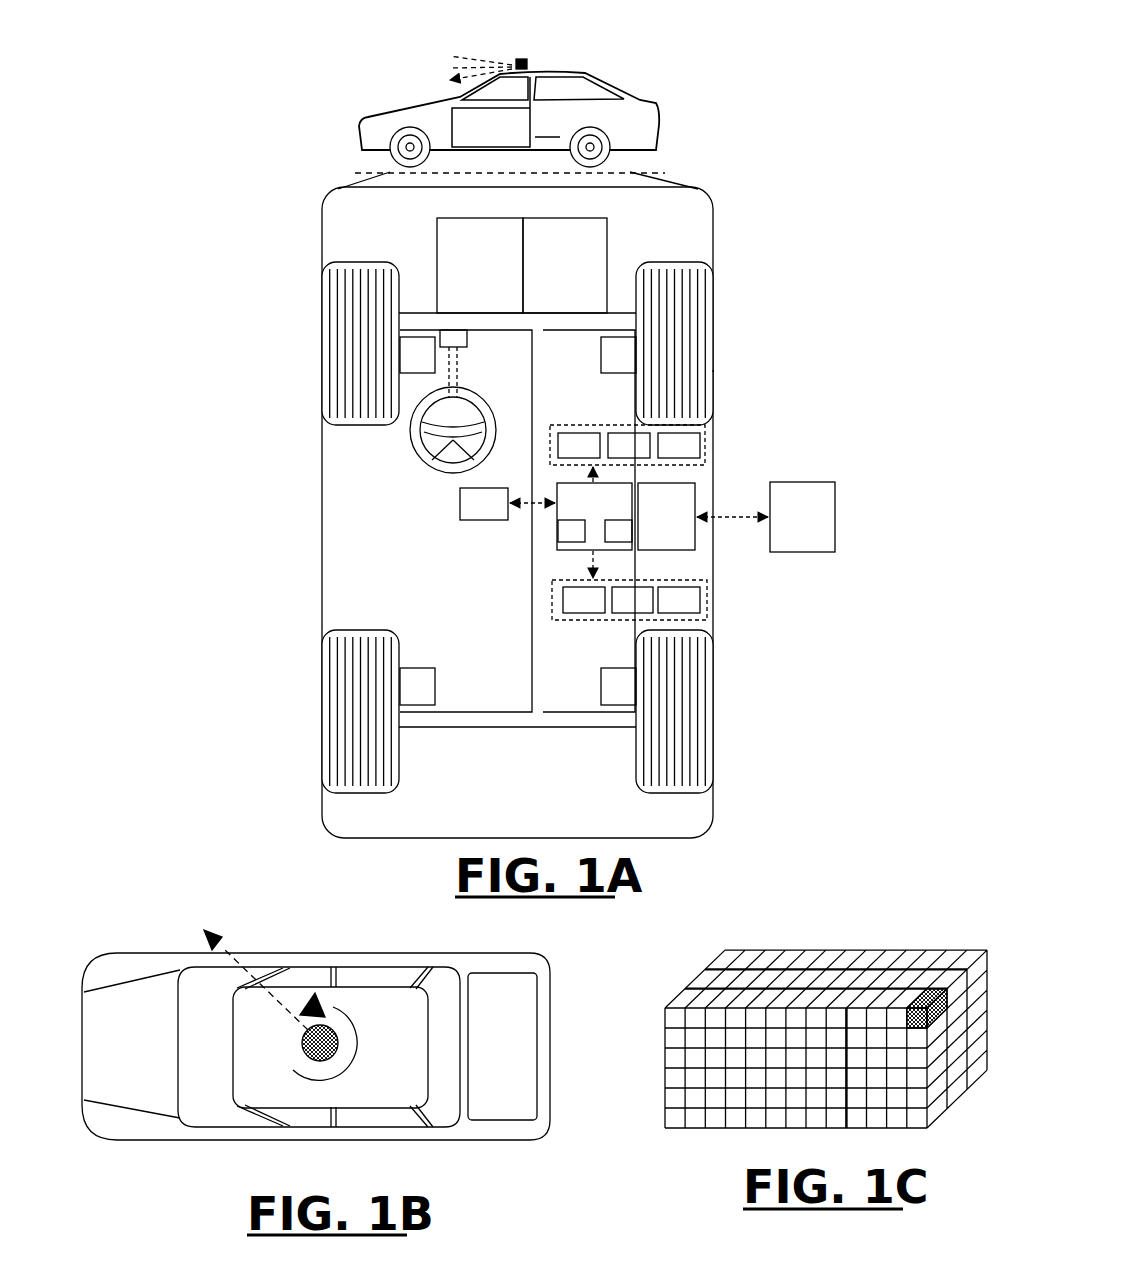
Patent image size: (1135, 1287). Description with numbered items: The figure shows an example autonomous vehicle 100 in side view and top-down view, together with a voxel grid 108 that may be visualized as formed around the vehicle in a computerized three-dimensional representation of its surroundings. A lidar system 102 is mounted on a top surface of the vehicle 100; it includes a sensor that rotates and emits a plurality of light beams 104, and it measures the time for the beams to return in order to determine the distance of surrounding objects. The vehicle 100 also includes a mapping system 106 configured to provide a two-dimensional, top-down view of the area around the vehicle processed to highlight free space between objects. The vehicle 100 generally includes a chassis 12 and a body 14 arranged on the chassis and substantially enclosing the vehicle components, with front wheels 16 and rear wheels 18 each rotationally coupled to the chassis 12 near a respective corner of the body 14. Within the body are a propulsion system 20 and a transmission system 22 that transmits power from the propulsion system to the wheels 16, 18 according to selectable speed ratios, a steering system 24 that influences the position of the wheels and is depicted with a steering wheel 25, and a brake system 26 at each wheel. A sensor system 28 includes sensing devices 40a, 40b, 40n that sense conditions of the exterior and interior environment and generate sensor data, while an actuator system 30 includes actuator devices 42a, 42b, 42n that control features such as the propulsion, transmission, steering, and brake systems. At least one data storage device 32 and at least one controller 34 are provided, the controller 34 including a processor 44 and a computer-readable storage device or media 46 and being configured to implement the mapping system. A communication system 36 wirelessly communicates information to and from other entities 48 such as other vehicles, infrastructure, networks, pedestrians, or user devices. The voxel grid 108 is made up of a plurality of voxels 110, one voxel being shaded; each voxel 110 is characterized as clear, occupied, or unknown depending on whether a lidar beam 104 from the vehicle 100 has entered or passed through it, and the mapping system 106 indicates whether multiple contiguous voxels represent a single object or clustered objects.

In FIG. 1A, the chassis 12 is at (541, 728).
In FIG. 1A, the body 14 is at (322, 486).
In FIG. 1A, the front wheels 16 is at (517, 343).
In FIG. 1A, the rear wheels 18 is at (517, 711).
In FIG. 1A, the propulsion system 20 is at (480, 265).
In FIG. 1A, the transmission system 22 is at (565, 265).
In FIG. 1A, the steering system 24 is at (432, 484).
In FIG. 1A, the steering wheel 25 is at (484, 392).
In FIG. 1A, the brake system 26 is at (518, 521).
In FIG. 1A, the sensor system 28 is at (588, 424).
In FIG. 1A, the actuator system 30 is at (575, 622).
In FIG. 1A, the data storage device 32 is at (507, 504).
In FIG. 1A, the controller 34 is at (594, 522).
In FIG. 1A, the communication system 36 is at (703, 516).
In FIG. 1A, the sensing device 40a is at (579, 445).
In FIG. 1A, the sensing device 40b is at (629, 445).
In FIG. 1A, the sensing device 40n is at (679, 445).
In FIG. 1A, the actuator device 42a is at (584, 600).
In FIG. 1A, the actuator device 42b is at (632, 600).
In FIG. 1A, the actuator device 42n is at (679, 600).
In FIG. 1A, the processor 44 is at (571, 531).
In FIG. 1A, the computer-readable storage device or media 46 is at (618, 531).
In FIG. 1A, the other entities 48 is at (802, 517).
In FIG. 1A, the vehicle 100 is at (594, 60).
In FIG. 1B, the vehicle 100 is at (147, 920).
In FIG. 1A, the lidar system 102 is at (530, 56).
In FIG. 1B, the lidar system 102 is at (302, 1042).
In FIG. 1A, the light beams 104 is at (482, 52).
In FIG. 1B, the light beams 104 is at (226, 946).
In FIG. 1A, the mapping system 106 is at (738, 370).
In FIG. 1C, the voxel grid 108 is at (862, 913).
In FIG. 1C, the voxel 110 is at (940, 990).